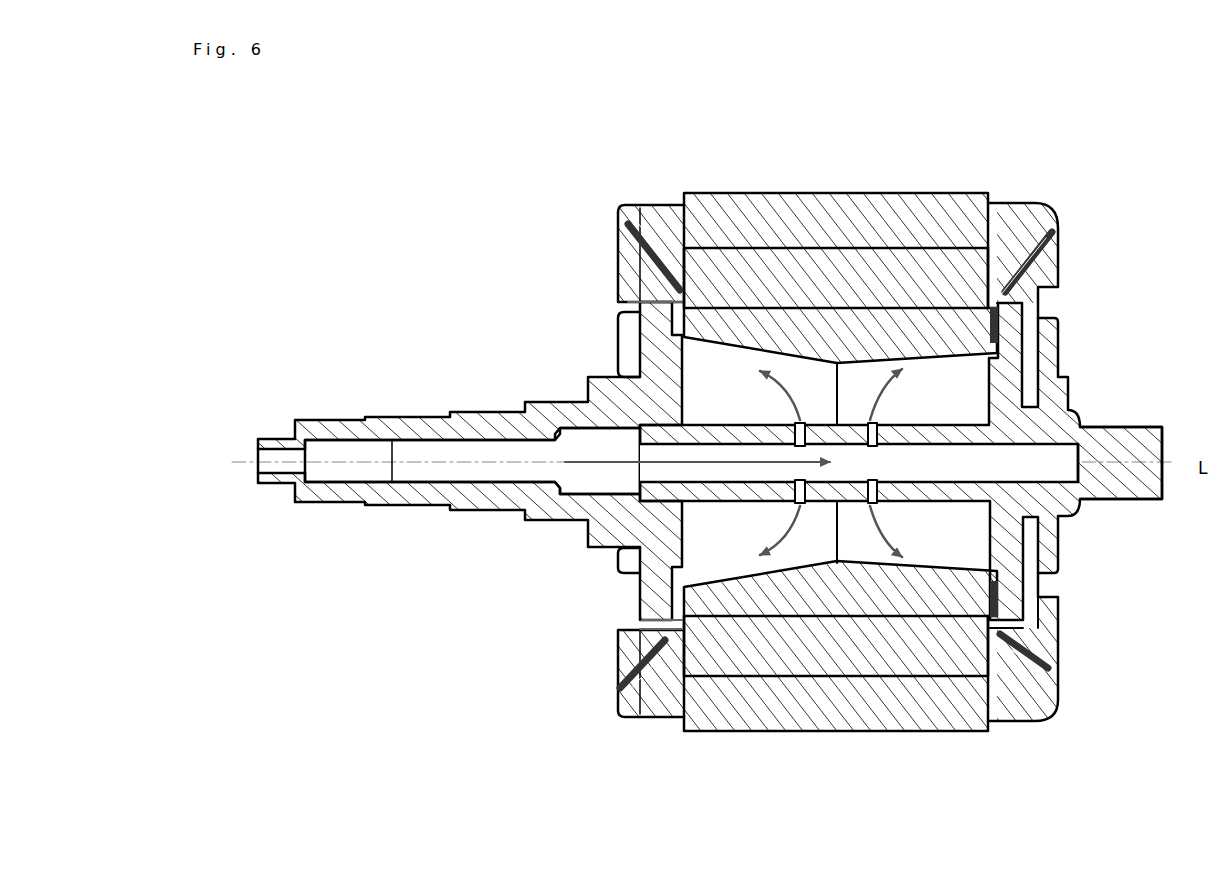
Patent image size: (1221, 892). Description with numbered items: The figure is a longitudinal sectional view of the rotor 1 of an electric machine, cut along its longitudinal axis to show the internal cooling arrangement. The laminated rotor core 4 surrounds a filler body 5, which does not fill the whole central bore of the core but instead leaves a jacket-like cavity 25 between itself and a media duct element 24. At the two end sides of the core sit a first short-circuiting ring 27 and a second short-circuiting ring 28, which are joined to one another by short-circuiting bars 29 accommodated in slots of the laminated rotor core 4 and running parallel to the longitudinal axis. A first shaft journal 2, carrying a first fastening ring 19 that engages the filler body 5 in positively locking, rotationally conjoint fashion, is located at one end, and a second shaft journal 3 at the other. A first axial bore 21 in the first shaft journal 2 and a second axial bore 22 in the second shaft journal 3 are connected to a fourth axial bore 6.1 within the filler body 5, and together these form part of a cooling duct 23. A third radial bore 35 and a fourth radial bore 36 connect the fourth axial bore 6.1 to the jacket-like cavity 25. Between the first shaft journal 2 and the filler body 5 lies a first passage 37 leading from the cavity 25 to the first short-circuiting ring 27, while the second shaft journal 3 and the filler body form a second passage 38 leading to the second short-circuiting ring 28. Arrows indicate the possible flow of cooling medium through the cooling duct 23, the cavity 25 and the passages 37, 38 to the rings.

The rotor 1 is at (420, 250).
The first shaft journal 2 is at (487, 498).
The second shaft journal 3 is at (1108, 483).
The laminated rotor core 4 is at (832, 288).
The filler body 5 is at (620, 205).
The fourth axial bore 6.1 is at (890, 458).
The first fastening ring 19 is at (618, 622).
The first axial bore 21 is at (443, 448).
The second axial bore 22 is at (1027, 468).
The cooling duct 23 is at (252, 466).
The media duct element 24 is at (903, 487).
The jacket-like cavity 25 is at (903, 407).
The first short-circuiting ring 27 is at (620, 250).
The second short-circuiting ring 28 is at (1030, 265).
The short-circuiting bars 29 is at (895, 213).
The third radial bore 35 is at (790, 500).
The fourth radial bore 36 is at (868, 502).
The first passage 37 is at (684, 295).
The second passage 38 is at (997, 327).